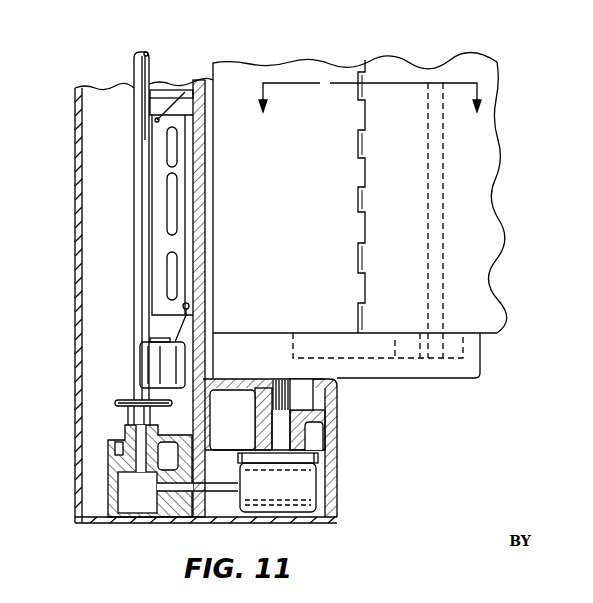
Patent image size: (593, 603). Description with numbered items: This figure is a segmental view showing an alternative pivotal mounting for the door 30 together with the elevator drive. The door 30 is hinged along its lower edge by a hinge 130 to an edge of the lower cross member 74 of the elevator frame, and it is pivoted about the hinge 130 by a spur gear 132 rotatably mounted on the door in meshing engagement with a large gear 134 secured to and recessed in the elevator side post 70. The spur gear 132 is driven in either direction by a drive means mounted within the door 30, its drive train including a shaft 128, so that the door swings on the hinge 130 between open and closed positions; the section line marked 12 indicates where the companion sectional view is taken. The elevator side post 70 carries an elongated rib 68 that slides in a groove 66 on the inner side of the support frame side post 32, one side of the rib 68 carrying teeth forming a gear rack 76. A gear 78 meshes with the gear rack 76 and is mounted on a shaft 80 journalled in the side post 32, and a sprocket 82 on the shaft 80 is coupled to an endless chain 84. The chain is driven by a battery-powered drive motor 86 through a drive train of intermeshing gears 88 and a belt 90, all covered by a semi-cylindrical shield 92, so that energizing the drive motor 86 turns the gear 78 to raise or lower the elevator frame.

The door 30 is at (458, 62).
The lower cross member 74 is at (335, 70).
The section line 12- 12 is at (366, 110).
The hinge 130 is at (358, 180).
The shaft 128 is at (428, 170).
The semi-cylindrical shield 92 is at (75, 302).
The drive motor 86 is at (140, 357).
The belt 90 is at (128, 401).
The intermeshing gears 88 is at (112, 450).
The gears 78 is at (283, 379).
The gear rack 76 is at (303, 388).
The elongated ribs 68 is at (320, 379).
The grooves 66 is at (310, 402).
The shafts 80 is at (305, 432).
The endless chain 84 is at (317, 463).
The side posts 32 is at (337, 470).
The sprockets 82 is at (290, 465).
The side posts 70 is at (467, 372).
The spur gear 132 is at (428, 360).
The large gear 134 is at (402, 350).